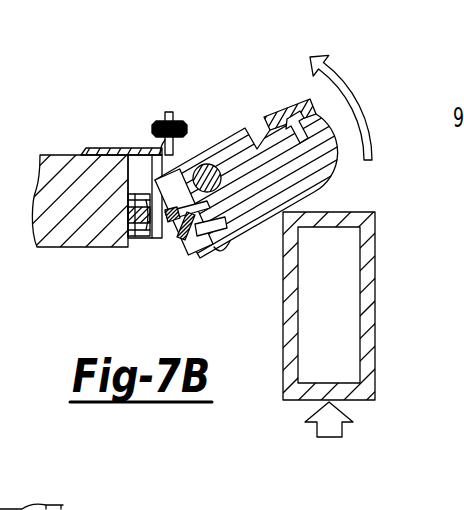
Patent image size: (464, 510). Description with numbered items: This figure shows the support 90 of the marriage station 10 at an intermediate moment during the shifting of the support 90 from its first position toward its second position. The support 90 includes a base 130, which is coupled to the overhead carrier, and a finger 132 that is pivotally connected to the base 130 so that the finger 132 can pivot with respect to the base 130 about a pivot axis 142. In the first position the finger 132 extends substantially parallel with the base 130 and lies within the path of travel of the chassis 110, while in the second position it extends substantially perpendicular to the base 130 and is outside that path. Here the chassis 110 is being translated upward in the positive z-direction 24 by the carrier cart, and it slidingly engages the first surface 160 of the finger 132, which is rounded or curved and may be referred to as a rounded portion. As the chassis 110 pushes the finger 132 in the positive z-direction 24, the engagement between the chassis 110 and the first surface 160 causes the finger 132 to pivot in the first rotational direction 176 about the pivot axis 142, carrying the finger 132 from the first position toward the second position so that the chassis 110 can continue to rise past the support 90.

The marriage station 10 is at (9, 309).
The positive z-direction 24 is at (330, 428).
The support 90 is at (64, 146).
The chassis 110 is at (368, 305).
The base 130 is at (89, 232).
The finger 132 is at (244, 130).
The pivot axis 142 is at (211, 162).
The first surface 160 is at (236, 246).
The first rotational direction 176 is at (339, 76).